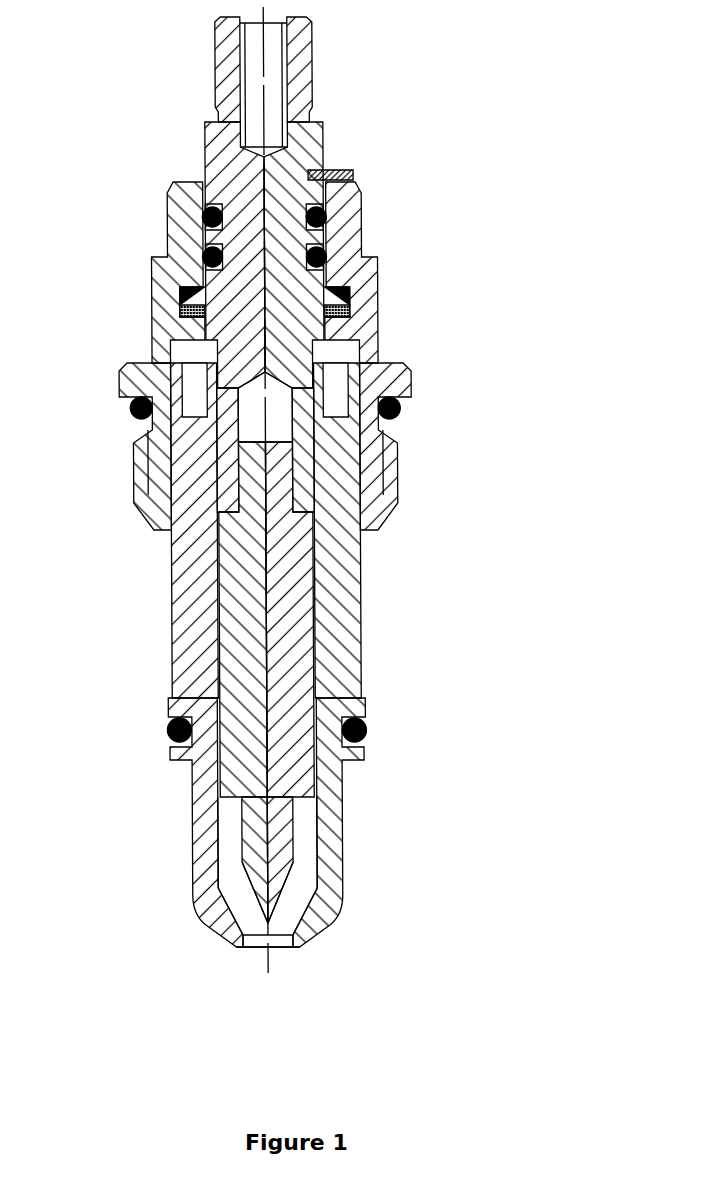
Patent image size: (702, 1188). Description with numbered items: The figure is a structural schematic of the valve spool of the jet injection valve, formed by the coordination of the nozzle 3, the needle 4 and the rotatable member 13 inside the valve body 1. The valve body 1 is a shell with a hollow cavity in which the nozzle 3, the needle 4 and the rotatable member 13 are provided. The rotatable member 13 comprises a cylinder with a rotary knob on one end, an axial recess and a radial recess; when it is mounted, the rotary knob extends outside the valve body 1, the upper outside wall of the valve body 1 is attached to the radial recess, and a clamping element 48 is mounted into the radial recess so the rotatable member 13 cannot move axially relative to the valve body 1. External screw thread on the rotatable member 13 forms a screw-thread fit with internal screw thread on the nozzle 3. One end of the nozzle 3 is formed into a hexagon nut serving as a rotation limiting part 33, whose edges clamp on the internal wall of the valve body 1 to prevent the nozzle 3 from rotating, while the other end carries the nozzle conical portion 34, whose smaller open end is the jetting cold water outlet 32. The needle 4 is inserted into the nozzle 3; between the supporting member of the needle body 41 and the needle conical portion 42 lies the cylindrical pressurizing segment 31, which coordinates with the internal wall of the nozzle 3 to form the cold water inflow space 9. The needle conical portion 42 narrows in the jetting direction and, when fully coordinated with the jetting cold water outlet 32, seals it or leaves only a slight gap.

The valve body 1 is at (368, 312).
The nozzle 3 is at (221, 530).
The needle 4 is at (341, 682).
The cold water inflow space 9 is at (235, 865).
The rotatable member 13 is at (325, 180).
The pressurizing segment 31 is at (220, 842).
The jetting cold water outlet 32 is at (282, 942).
The rotation limiting part 33 is at (330, 453).
The nozzle conical portion 34 is at (215, 925).
The supporting member of the needle body 41 is at (290, 827).
The needle conical portion 42 is at (300, 887).
The clamping element 48 is at (353, 170).